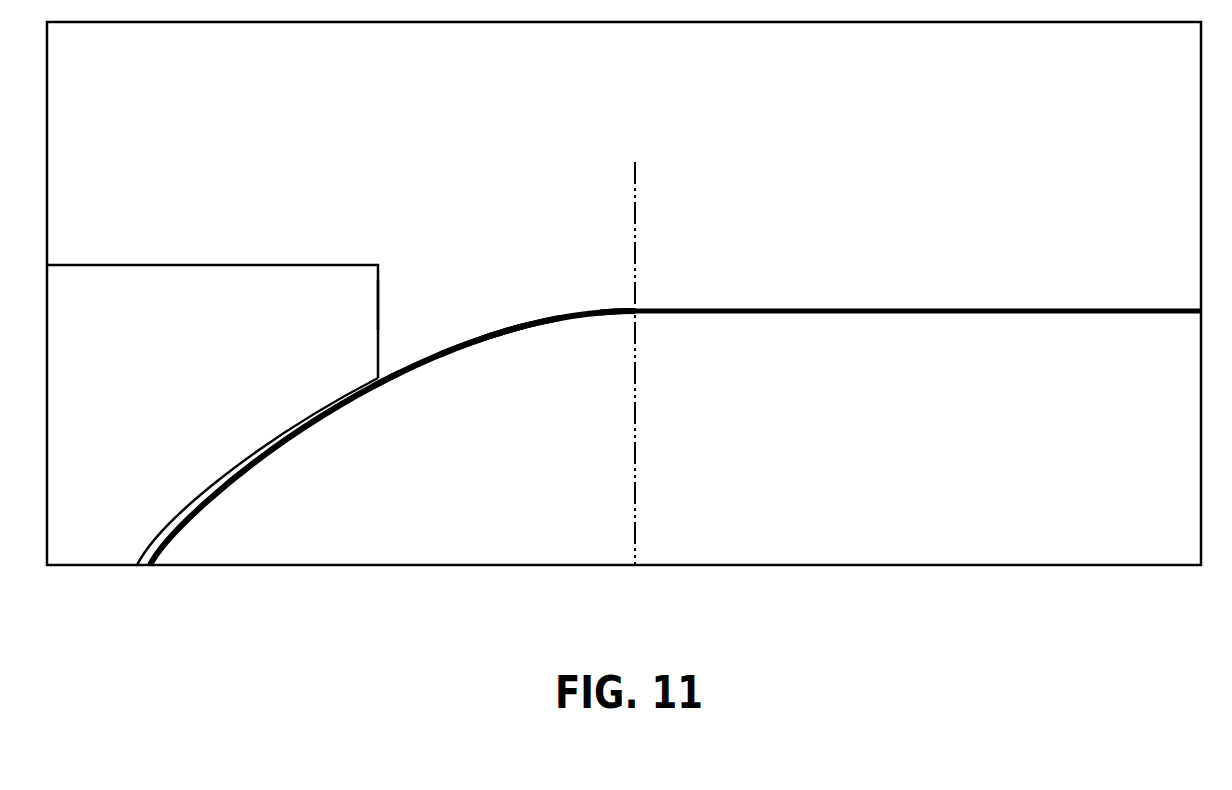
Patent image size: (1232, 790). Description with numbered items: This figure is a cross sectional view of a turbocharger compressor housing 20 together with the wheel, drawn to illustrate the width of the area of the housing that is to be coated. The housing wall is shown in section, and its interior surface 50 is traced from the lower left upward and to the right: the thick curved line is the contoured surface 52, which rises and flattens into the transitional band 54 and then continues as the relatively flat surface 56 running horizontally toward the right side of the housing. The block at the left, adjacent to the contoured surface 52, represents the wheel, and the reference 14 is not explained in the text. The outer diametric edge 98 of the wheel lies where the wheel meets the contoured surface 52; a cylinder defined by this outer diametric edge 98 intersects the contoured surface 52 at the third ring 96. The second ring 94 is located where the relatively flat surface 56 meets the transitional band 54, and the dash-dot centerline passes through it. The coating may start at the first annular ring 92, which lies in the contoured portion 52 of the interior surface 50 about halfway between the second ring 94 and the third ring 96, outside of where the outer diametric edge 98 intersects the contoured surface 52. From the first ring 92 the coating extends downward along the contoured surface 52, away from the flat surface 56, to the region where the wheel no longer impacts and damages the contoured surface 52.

The component body 14 is at (252, 265).
The compressor housing 20 is at (807, 425).
The interior surface 50 is at (204, 500).
The contoured surface 52 is at (289, 438).
The transitional band 54 is at (488, 338).
The relatively flat surface 56 is at (941, 311).
The first annular ring 92 is at (503, 332).
The second ring 94 is at (628, 311).
The third ring 96 is at (383, 382).
The outer diametric edge 98 is at (380, 303).